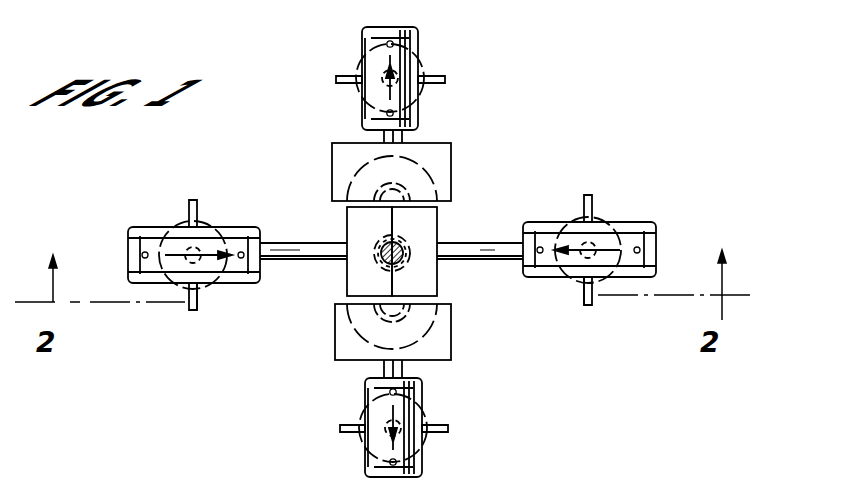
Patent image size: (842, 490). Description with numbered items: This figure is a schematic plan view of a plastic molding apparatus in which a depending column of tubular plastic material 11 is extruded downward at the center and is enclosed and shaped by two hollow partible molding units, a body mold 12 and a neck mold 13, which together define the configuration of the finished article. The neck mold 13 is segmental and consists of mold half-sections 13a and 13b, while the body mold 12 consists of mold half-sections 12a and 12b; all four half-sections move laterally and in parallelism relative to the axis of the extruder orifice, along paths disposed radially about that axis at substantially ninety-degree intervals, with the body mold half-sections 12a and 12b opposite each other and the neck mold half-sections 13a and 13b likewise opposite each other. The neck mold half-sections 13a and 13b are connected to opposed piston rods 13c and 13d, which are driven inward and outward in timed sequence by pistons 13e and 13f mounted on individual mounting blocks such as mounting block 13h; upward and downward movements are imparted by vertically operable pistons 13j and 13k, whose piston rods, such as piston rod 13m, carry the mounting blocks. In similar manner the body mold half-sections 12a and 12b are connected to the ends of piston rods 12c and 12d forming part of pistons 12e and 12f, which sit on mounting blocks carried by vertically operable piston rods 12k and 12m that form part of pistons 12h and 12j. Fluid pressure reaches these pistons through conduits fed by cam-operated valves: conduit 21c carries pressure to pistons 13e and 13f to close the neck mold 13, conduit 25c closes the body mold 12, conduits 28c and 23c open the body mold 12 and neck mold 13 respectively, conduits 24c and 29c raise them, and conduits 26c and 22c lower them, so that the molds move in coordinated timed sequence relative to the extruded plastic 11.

The tubular plastic material 11 is at (380, 255).
The body mold 12 is at (312, 326).
The body mold half-section 12a is at (443, 340).
The body mold half-section 12b is at (440, 162).
The piston rod 12c is at (385, 371).
The piston rod 12d is at (378, 136).
The piston 12e is at (378, 456).
The piston 12f is at (372, 44).
The piston 12h is at (428, 416).
The piston 12j is at (427, 95).
The piston rod 12k is at (432, 443).
The piston rod 12m is at (425, 62).
The neck mold 13 is at (318, 286).
The neck mold half-section 13a is at (425, 220).
The neck mold half-section 13b is at (357, 221).
The piston rod 13c is at (489, 244).
The piston rod 13d is at (287, 250).
The piston 13e is at (638, 230).
The piston 13f is at (150, 262).
The mounting block 13h is at (185, 248).
The piston 13j is at (578, 282).
The piston 13k is at (200, 290).
The piston rod 13m is at (600, 240).
The conduit 21c is at (142, 253).
The conduit 22c is at (222, 172).
The conduit 23c is at (243, 252).
The conduit 24c is at (445, 80).
The conduit 25c is at (418, 45).
The conduit 26c is at (342, 79).
The conduit 28c is at (418, 115).
The conduit 29c is at (192, 309).